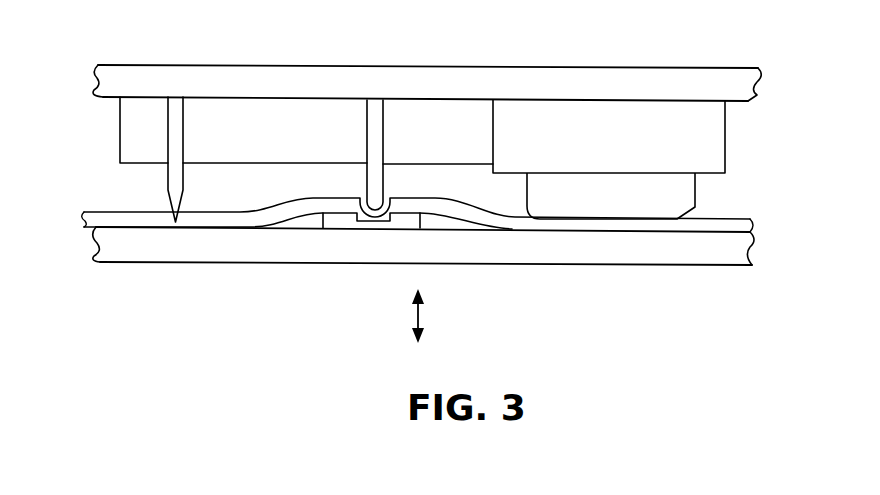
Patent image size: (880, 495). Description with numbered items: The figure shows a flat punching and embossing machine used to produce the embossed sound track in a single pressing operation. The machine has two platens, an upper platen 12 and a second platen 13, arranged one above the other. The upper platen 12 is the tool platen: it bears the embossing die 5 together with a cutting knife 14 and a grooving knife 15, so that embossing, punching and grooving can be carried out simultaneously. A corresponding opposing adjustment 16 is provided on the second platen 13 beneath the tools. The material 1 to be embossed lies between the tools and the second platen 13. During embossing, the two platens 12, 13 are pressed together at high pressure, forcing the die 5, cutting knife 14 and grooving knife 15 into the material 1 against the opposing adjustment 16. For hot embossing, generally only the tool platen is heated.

The material 1 is at (137, 218).
The die 5 is at (678, 191).
The platen 12 is at (672, 86).
The second platen 13 is at (620, 250).
The cutting knife 14 is at (172, 187).
The grooving knife 15 is at (376, 112).
The opposing adjustment 16 is at (340, 222).